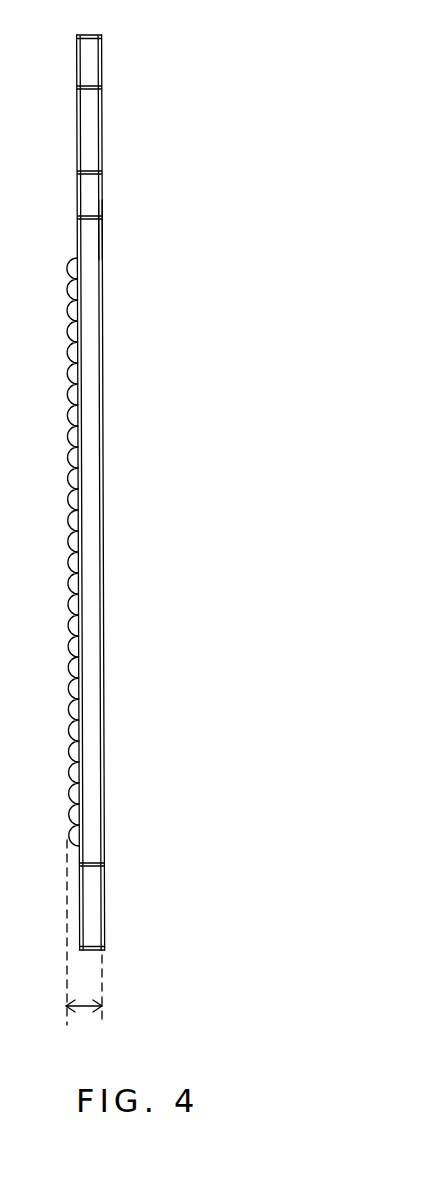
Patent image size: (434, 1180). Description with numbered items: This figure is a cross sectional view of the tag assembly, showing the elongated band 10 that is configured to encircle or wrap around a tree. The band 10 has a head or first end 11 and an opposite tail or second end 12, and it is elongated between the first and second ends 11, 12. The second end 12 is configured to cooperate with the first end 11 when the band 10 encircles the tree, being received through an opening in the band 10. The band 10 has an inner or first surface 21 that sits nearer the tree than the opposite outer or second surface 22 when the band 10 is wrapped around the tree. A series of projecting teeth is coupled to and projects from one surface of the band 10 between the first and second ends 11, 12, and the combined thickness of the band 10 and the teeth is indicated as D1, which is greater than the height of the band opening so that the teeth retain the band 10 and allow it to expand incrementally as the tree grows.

The band 10 is at (94, 447).
The first end 11 is at (148, 63).
The second end 12 is at (133, 927).
The first surface 21 is at (100, 234).
The second surface 22 is at (78, 233).
The combined thickness of the band and teeth D1 is at (90, 999).